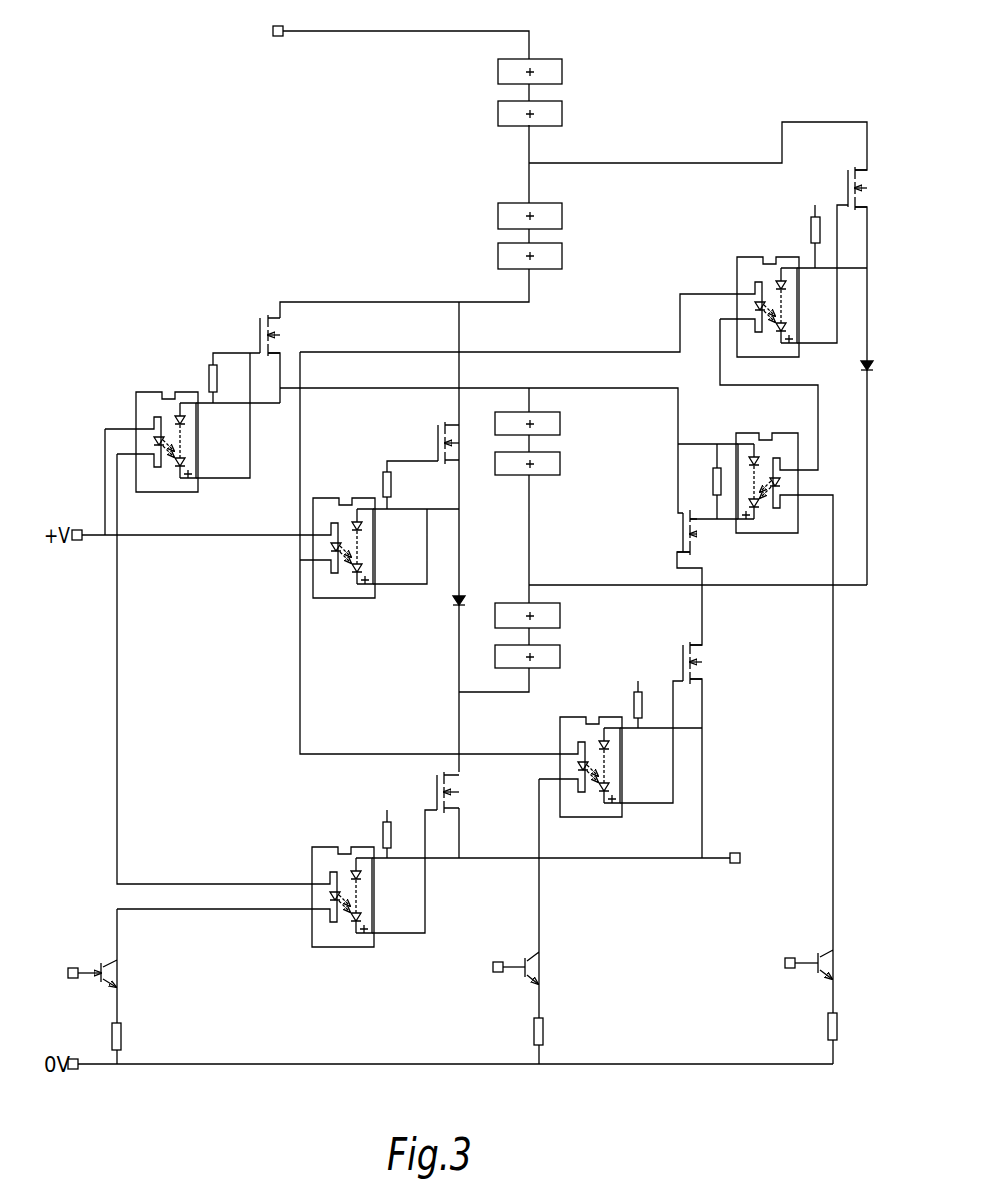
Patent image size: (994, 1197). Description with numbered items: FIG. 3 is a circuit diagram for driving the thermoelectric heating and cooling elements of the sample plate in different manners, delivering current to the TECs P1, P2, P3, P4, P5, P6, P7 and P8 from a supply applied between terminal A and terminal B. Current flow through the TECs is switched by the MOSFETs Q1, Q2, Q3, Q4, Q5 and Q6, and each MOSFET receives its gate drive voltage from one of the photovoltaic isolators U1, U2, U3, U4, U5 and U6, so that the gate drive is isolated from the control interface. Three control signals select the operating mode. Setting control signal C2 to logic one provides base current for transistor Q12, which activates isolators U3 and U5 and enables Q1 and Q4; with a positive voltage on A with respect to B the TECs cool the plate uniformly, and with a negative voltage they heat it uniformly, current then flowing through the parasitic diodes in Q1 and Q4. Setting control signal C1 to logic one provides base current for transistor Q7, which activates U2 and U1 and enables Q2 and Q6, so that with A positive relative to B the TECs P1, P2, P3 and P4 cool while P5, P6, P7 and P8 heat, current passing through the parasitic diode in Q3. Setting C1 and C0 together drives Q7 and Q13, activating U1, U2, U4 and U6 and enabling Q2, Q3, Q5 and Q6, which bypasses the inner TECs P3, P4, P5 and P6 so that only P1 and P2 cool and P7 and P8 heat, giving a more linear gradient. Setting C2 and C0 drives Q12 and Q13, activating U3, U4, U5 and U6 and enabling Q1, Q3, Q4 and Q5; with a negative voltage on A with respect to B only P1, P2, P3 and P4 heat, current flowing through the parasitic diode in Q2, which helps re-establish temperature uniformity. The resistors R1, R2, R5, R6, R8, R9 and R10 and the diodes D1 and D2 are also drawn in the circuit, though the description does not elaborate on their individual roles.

The terminal A is at (267, 31).
The terminal B is at (746, 858).
The control signal C0 is at (788, 963).
The control signal C1 is at (497, 967).
The control signal C2 is at (72, 973).
The TEC P1 is at (546, 72).
The TEC P2 is at (546, 114).
The TEC P3 is at (546, 216).
The TEC P4 is at (546, 256).
The TEC P5 is at (543, 616).
The TEC P6 is at (543, 656).
The TEC P7 is at (543, 424).
The TEC P8 is at (543, 464).
The photovoltaic isolator U1 is at (344, 535).
The photovoltaic isolator U2 is at (591, 754).
The photovoltaic isolator U3 is at (343, 884).
The photovoltaic isolator U4 is at (767, 468).
The photovoltaic isolator U5 is at (167, 429).
The photovoltaic isolator U6 is at (768, 294).
The MOSFET Q1 is at (460, 792).
The MOSFET Q2 is at (677, 663).
The MOSFET Q3 is at (673, 532).
The MOSFET Q4 is at (255, 335).
The MOSFET Q5 is at (843, 188).
The MOSFET Q6 is at (435, 443).
The transistor Q7 is at (549, 968).
The transistor Q12 is at (129, 973).
The transistor Q13 is at (846, 964).
The resistor R1 is at (553, 1031).
The resistor R2 is at (552, 658).
The resistor R5 is at (847, 1026).
The resistor R6 is at (131, 1036).
The resistor R8 is at (226, 378).
The resistor R9 is at (803, 231).
The resistor R10 is at (405, 484).
The diode D1 is at (854, 365).
The diode D2 is at (446, 600).